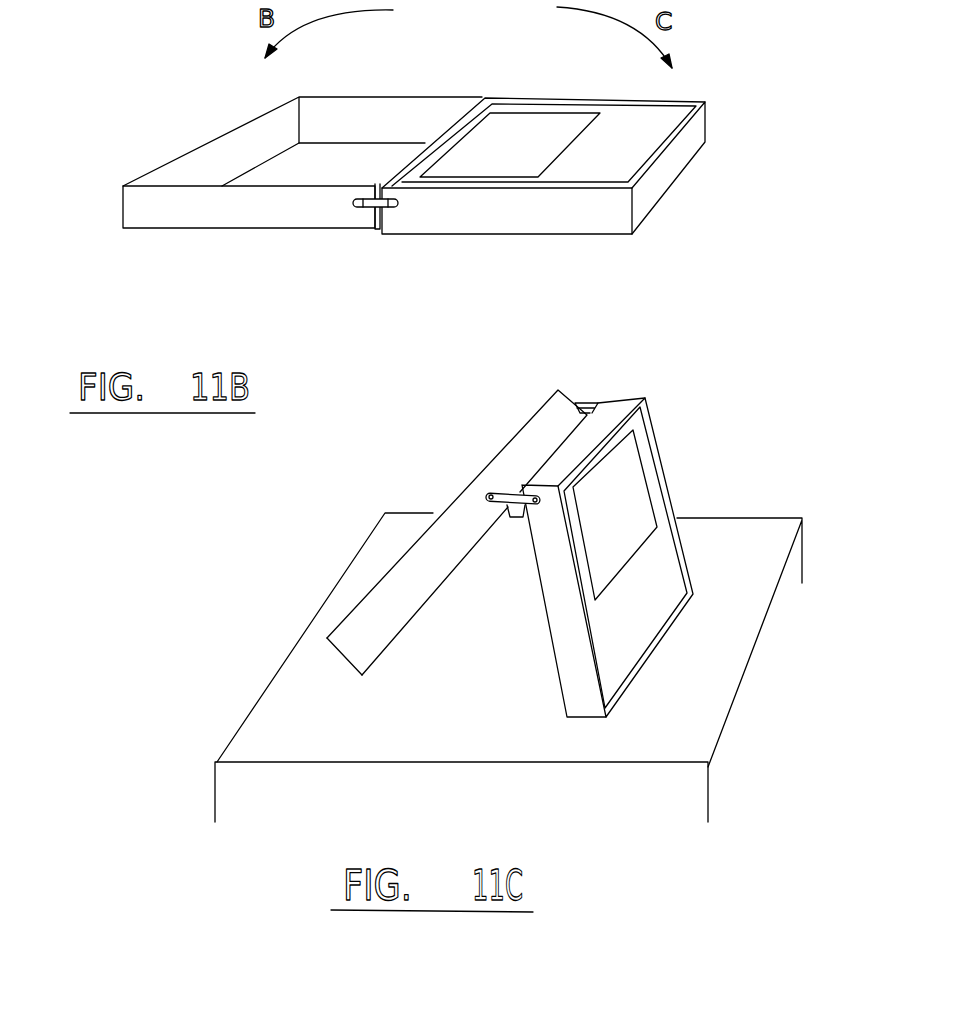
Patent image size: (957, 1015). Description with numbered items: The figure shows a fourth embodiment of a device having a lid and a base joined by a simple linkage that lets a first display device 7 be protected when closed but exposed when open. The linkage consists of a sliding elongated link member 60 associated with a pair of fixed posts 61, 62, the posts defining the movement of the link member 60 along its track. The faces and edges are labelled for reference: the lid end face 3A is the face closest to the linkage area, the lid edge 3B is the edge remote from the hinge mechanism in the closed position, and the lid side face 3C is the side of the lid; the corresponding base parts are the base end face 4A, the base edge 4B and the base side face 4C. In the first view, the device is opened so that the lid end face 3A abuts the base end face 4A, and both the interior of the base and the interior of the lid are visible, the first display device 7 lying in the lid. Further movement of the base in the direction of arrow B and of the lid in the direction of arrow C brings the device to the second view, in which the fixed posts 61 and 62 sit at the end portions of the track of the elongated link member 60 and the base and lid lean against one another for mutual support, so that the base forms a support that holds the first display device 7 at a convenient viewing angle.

In FIG. 11C, the lid end face 3A is at (585, 440).
In FIG. 11B, the lid edge 3B is at (633, 217).
In FIG. 11C, the lid edge 3B is at (585, 718).
In FIG. 11B, the lid side face 3C is at (570, 159).
In FIG. 11C, the lid side face 3C is at (601, 580).
In FIG. 11C, the base end face 4A is at (540, 435).
In FIG. 11B, the base edge 4B is at (120, 213).
In FIG. 11B, the base side face 4C is at (253, 204).
In FIG. 11C, the base side face 4C is at (356, 509).
In FIG. 11B, the first display device 7 is at (508, 143).
In FIG. 11C, the first display device 7 is at (613, 493).
In FIG. 11B, the sliding elongated link member 60 is at (357, 247).
In FIG. 11C, the sliding elongated link member 60 is at (494, 475).
In FIG. 11B, the fixed post 61 is at (387, 210).
In FIG. 11C, the fixed post 61 is at (538, 506).
In FIG. 11B, the fixed post 62 is at (357, 209).
In FIG. 11C, the fixed post 62 is at (487, 496).